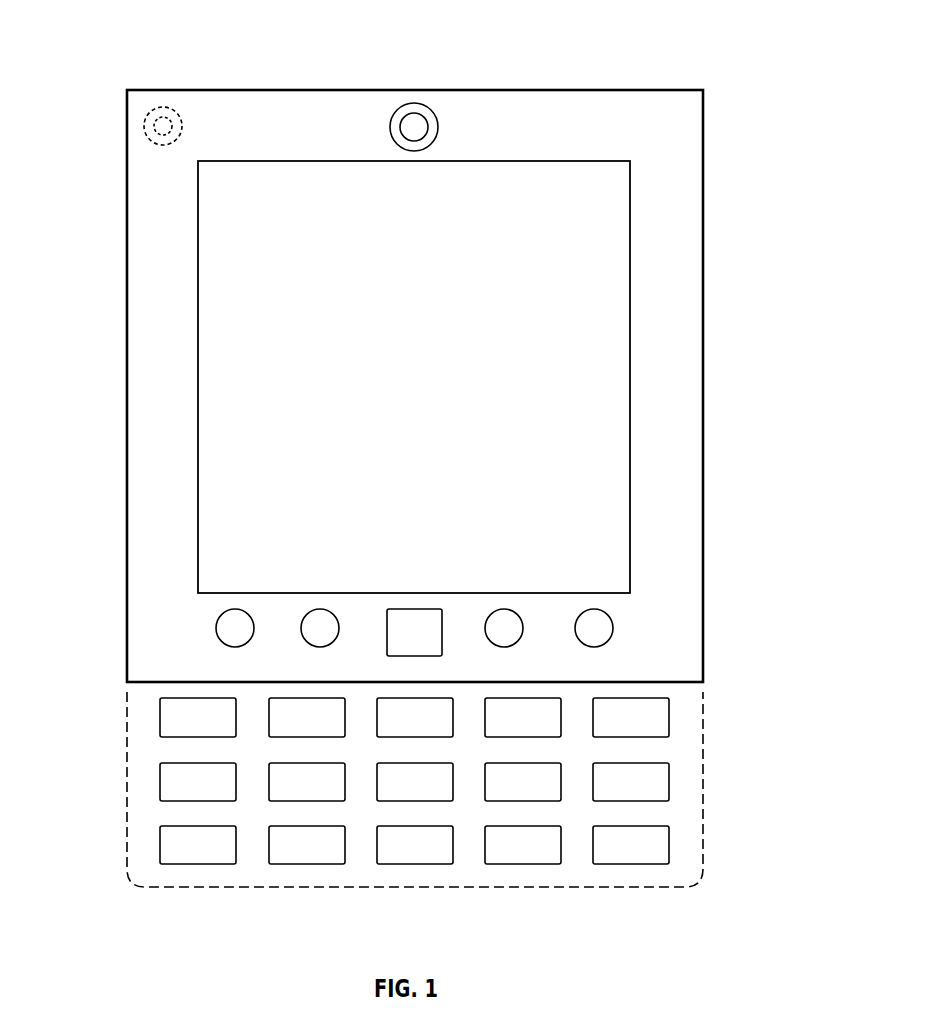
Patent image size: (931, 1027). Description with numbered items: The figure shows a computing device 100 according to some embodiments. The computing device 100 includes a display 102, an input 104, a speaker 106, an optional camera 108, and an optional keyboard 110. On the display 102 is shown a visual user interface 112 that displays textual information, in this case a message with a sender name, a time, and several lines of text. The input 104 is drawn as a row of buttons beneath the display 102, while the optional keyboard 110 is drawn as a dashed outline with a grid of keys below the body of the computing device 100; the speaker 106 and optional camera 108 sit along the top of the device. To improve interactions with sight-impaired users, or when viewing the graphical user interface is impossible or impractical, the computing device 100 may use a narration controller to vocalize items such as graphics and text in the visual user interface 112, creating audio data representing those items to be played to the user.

The computing device 100 is at (703, 197).
The display 102 is at (632, 352).
The input 104 is at (613, 628).
The speaker 106 is at (144, 126).
The camera 108 is at (413, 102).
The keyboard 110 is at (703, 815).
The visual user interface 112 is at (198, 197).